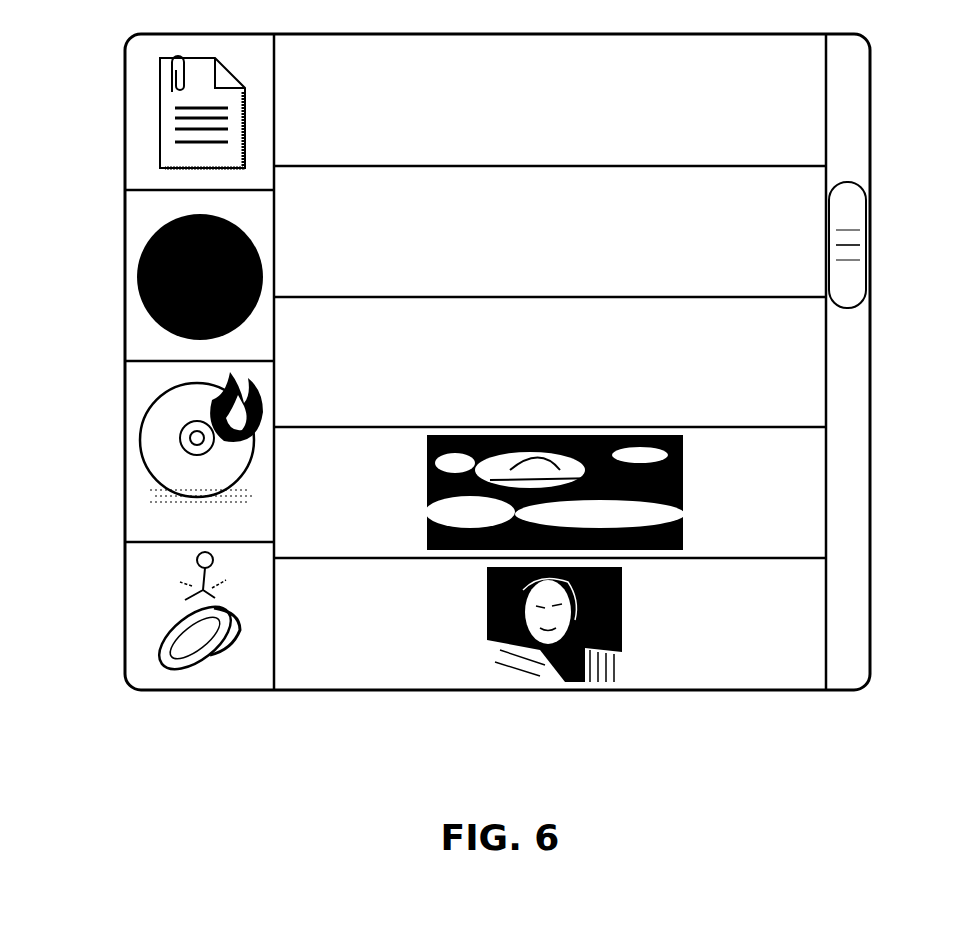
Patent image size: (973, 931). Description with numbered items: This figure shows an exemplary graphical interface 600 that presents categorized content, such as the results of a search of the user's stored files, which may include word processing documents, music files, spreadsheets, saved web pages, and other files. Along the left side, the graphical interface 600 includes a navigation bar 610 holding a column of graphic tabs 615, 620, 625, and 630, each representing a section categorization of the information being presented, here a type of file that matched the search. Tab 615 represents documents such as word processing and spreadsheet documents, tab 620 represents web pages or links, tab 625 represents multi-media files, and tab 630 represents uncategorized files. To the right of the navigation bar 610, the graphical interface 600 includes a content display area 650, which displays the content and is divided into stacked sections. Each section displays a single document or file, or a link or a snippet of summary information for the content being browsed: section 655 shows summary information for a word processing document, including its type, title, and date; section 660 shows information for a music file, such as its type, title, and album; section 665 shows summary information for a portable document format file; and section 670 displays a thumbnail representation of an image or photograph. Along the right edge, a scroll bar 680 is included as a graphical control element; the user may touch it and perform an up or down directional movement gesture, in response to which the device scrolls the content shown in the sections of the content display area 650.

The graphical interface 600 is at (893, 37).
The navigation bar 610 is at (203, 708).
The graphic tab 615 is at (131, 83).
The graphic tab 620 is at (131, 250).
The graphic tab 625 is at (131, 425).
The graphic tab 630 is at (131, 595).
The content display area 650 is at (275, 697).
The section 655 is at (813, 100).
The section 660 is at (813, 181).
The section 665 is at (813, 337).
The section 670 is at (813, 451).
The scroll bar 680 is at (862, 247).